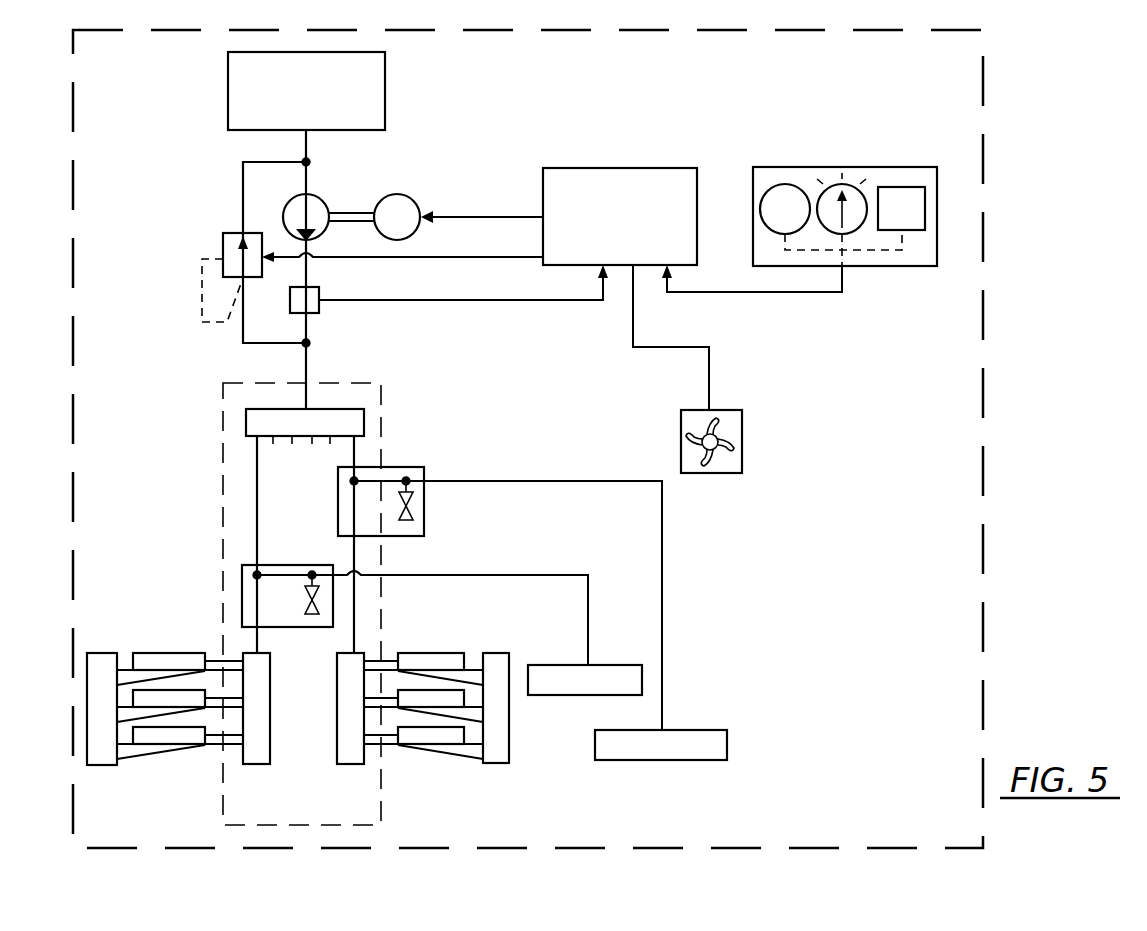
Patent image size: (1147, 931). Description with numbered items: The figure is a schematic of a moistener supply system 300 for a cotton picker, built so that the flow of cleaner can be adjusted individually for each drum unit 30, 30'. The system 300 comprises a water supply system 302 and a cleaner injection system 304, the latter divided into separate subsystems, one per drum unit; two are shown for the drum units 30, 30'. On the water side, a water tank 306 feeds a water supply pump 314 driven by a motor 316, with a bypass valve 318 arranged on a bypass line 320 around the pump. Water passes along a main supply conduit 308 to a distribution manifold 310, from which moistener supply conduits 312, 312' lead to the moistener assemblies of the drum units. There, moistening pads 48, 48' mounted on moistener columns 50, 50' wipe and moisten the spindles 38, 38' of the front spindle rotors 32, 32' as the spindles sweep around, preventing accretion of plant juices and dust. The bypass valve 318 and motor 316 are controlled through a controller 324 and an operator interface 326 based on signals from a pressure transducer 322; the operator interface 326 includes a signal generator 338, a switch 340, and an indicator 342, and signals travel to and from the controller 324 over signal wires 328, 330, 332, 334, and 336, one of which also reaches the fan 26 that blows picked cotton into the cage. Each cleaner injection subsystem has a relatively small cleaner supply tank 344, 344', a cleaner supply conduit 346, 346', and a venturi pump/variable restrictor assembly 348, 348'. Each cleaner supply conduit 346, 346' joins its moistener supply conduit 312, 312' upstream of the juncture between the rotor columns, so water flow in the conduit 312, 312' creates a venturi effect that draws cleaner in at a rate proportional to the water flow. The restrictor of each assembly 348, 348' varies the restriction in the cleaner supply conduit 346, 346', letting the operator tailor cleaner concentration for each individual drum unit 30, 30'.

The moistener supply system 300 is at (996, 38).
The water supply system 302 is at (386, 163).
The cleaner injection system 304 is at (700, 688).
The water tank 306 is at (385, 70).
The main supply conduit 308 is at (308, 350).
The distribution manifold 310 is at (246, 421).
The moistener supply conduit 312 is at (404, 533).
The moistener supply conduit 312' is at (201, 544).
The water supply pump 314 is at (312, 200).
The motor 316 is at (403, 196).
The bypass valve 318 is at (223, 240).
The bypass line 320 is at (243, 203).
The pressure transducer 322 is at (319, 290).
The controller 324 is at (670, 146).
The operator interface 326 is at (812, 157).
The signal wire 328 is at (500, 242).
The signal wire 330 is at (514, 200).
The signal wire 332 is at (500, 284).
The signal wire 334 is at (810, 292).
The signal wire 336 is at (692, 347).
The signal generator 338 is at (783, 184).
The switch 340 is at (893, 187).
The indicator 342 is at (846, 184).
The cleaner supply tank 344 is at (696, 719).
The cleaner supply tank 344' is at (585, 696).
The cleaner supply conduit 346 is at (549, 605).
The cleaner supply conduit 346' is at (422, 602).
The venturi pump/variable restrictor assembly 348 is at (422, 488).
The venturi pump/variable restrictor assembly 348' is at (287, 572).
The fan 26 is at (742, 416).
The drum unit 30 is at (435, 724).
The drum unit 30' is at (187, 722).
The front spindle rotor 32 is at (518, 724).
The front spindle rotor 32' is at (116, 681).
The spindle 38 is at (434, 733).
The spindle 38' is at (163, 733).
The moistening pad 48 is at (444, 709).
The moistening pad 48' is at (146, 733).
The moistener column 50 is at (357, 732).
The moistener column 50' is at (246, 732).